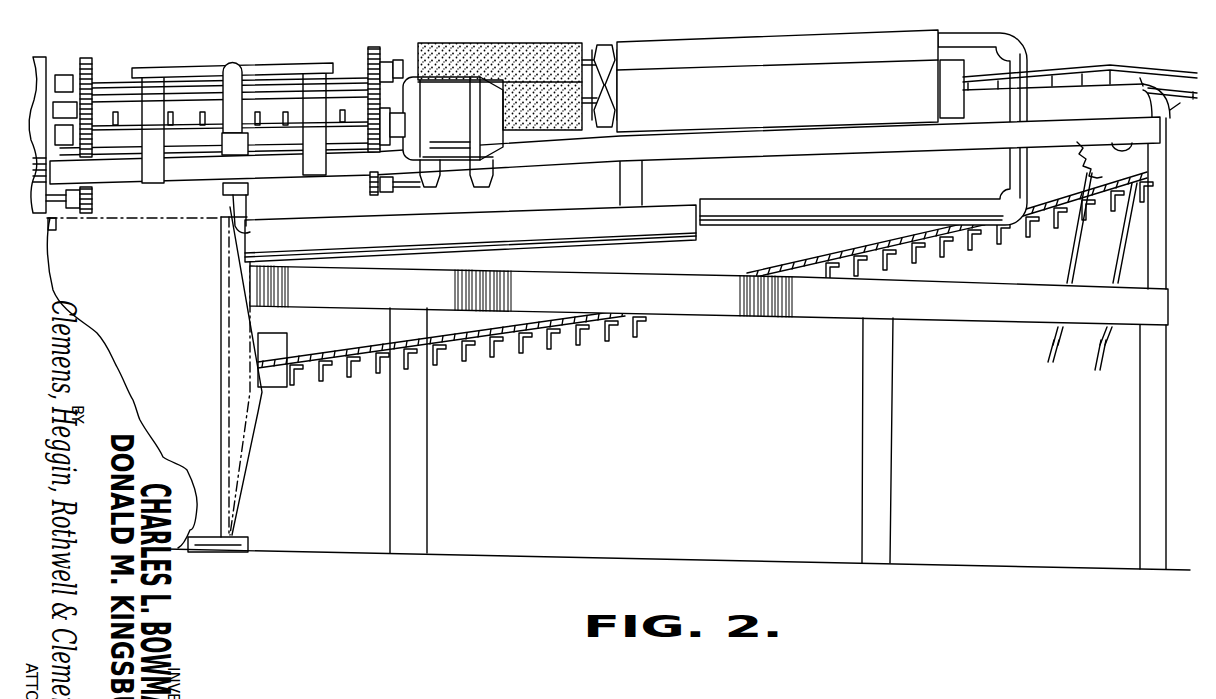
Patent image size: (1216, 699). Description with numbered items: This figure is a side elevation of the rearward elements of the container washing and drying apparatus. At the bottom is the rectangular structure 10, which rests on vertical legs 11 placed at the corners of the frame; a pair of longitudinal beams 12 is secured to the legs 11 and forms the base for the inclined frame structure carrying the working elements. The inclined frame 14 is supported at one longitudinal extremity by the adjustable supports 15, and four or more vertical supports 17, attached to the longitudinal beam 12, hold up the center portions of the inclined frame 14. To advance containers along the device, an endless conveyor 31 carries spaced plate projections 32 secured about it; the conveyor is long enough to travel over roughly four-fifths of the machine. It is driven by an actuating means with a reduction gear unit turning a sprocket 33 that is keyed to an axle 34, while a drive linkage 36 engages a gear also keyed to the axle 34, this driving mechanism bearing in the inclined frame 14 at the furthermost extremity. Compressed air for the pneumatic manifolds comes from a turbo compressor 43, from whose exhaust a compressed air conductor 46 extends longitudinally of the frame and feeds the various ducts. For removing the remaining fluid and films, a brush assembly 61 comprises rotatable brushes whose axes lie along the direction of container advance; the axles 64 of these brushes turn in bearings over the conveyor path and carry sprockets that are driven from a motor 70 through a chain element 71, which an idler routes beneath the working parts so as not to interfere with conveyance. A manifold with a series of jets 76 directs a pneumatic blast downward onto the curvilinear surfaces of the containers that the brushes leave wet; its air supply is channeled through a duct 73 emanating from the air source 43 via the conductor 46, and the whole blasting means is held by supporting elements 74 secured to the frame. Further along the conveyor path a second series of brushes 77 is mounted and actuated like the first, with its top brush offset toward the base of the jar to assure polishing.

The rectangular structure 10 is at (829, 331).
The vertical legs 11 is at (428, 462).
The beams 12 is at (997, 306).
The inclined frame 14 is at (816, 148).
The adjustable supports 15 is at (1157, 224).
The vertical supports 17 is at (643, 195).
The endless conveyor 31 is at (521, 364).
The plate projections 32 is at (604, 333).
The sprocket 33 is at (1101, 170).
The axle 34 is at (1124, 143).
The drive linkage 36 is at (1068, 278).
The turbo compressor 43 is at (233, 476).
The compressed air conductor 46 is at (562, 215).
The brush assembly 61 is at (60, 60).
The axles 64 is at (86, 62).
The motor 70 is at (466, 109).
The chain element 71 is at (88, 78).
The duct 73 is at (238, 60).
The supporting elements 74 is at (163, 142).
The jets 76 is at (282, 64).
The second series of brushes 77 is at (488, 37).